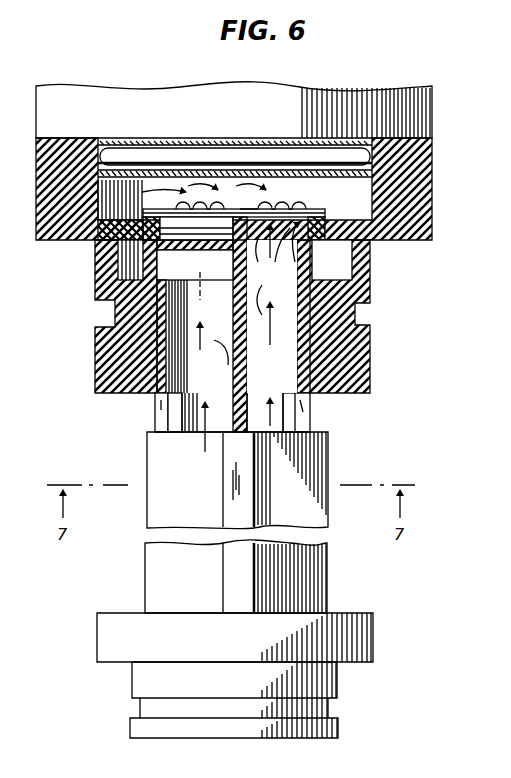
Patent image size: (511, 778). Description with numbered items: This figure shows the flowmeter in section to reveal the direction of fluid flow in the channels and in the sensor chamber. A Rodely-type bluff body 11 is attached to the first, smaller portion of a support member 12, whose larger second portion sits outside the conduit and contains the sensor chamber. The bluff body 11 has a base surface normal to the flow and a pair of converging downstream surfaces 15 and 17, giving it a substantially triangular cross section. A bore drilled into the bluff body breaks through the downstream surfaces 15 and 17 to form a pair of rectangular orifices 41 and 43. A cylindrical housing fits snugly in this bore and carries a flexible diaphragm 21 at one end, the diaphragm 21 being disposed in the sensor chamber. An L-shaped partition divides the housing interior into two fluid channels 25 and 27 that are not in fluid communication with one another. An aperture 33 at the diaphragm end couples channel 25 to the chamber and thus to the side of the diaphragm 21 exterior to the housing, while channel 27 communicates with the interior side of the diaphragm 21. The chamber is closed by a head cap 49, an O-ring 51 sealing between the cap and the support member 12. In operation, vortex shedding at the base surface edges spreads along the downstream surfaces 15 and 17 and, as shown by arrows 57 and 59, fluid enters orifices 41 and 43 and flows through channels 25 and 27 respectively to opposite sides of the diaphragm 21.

The bluff body 11 is at (328, 447).
The support member 12 is at (432, 188).
The downstream surface 15 is at (158, 578).
The downstream surface 17 is at (310, 577).
The flexible diaphragm 21 is at (300, 208).
The fluid channel 25 is at (152, 352).
The fluid channel 27 is at (283, 358).
The aperture 33 is at (168, 272).
The rectangular orifice 41 is at (160, 410).
The rectangular orifice 43 is at (288, 410).
The head cap 49 is at (432, 110).
The O-ring 51 is at (372, 157).
The arrows 57 is at (140, 204).
The arrows 59 is at (273, 324).